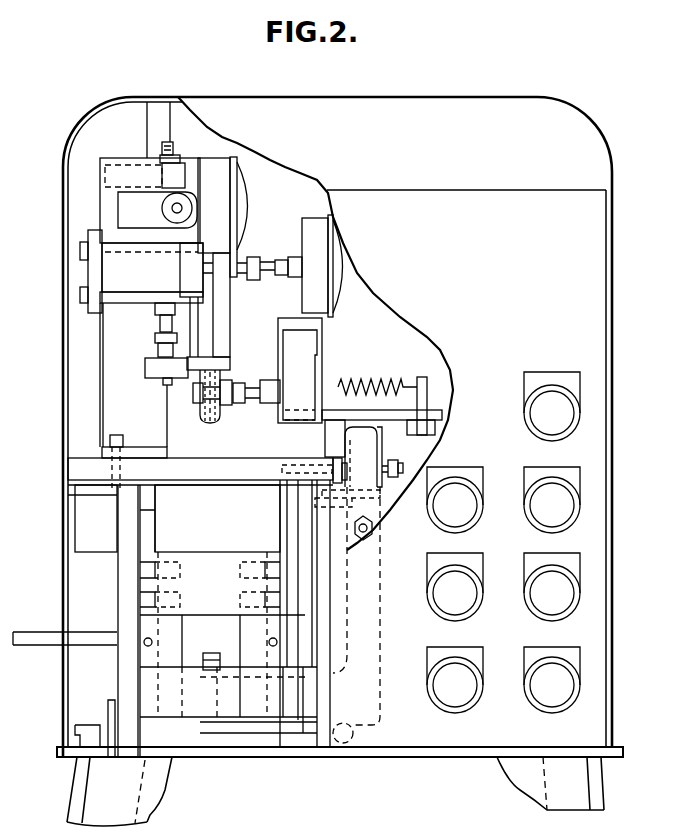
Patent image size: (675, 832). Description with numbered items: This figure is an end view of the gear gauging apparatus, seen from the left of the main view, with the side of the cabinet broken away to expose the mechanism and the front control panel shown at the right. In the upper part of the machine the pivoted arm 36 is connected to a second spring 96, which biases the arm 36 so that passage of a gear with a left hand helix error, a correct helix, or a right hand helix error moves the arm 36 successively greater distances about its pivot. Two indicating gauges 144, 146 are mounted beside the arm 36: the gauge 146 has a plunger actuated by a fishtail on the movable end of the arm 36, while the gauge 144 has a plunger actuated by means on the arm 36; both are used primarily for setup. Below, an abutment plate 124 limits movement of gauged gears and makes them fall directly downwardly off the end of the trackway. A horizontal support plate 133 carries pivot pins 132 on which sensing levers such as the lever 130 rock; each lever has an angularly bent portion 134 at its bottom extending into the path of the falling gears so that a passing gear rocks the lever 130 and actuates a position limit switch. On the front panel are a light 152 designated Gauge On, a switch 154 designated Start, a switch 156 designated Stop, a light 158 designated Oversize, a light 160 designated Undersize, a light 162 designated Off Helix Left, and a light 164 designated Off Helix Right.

The arm 36 is at (232, 335).
The second spring 96 is at (377, 377).
The abutment plate 124 is at (222, 552).
The lever 130 is at (380, 602).
The pivot pin 132 is at (407, 457).
The horizontal support plate 133 is at (255, 467).
The angularly bent portion 134 is at (367, 715).
The indicating gauge 144 is at (250, 210).
The indicating gauge 146 is at (340, 260).
The light 152 is at (470, 467).
The switch 154 is at (490, 545).
The switch 156 is at (502, 637).
The light 158 is at (525, 392).
The light 160 is at (543, 467).
The light 162 is at (553, 552).
The light 164 is at (568, 647).